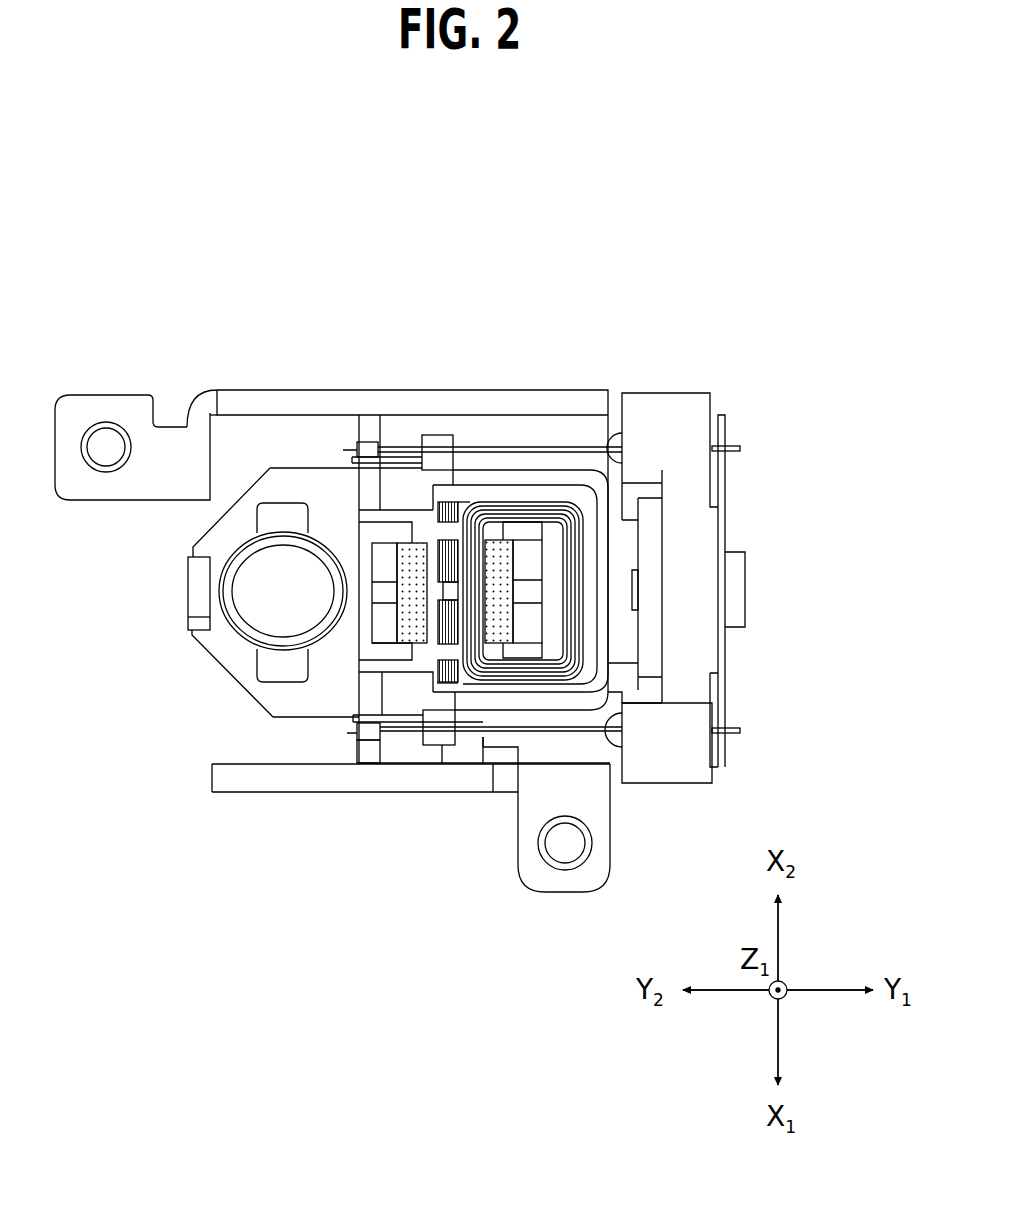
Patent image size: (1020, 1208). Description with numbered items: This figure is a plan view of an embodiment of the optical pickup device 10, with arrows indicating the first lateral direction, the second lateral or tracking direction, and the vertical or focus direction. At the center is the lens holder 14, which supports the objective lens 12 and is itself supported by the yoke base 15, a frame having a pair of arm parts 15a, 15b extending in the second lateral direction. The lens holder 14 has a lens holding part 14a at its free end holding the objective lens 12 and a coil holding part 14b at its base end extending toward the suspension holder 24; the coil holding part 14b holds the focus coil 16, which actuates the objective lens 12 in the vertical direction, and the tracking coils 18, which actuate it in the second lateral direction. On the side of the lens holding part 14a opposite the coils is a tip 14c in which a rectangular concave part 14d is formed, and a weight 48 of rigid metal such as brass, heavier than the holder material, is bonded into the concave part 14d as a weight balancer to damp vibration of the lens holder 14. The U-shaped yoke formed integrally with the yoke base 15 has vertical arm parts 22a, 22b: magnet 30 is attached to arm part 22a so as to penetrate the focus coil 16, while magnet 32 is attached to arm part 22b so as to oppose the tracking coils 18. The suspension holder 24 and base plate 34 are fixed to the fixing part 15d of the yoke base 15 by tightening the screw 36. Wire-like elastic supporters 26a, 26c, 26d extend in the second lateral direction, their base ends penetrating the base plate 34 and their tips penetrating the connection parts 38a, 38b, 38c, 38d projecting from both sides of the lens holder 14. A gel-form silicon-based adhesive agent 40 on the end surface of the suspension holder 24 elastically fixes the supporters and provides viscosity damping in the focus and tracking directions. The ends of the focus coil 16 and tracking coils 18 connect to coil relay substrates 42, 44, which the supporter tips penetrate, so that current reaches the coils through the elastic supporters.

The optical pickup device 10 is at (385, 227).
The objective lens 12 is at (253, 612).
The lens holder 14 is at (290, 463).
The lens holding part 14a is at (320, 493).
The coil holding part 14b is at (513, 478).
The tip 14c is at (213, 543).
The concave part 14d is at (187, 620).
The yoke base 15 is at (308, 388).
The arm part 15a is at (232, 782).
The arm part 15b is at (398, 416).
The fixing part 15d is at (652, 545).
The focus coil 16 is at (557, 470).
The tracking coils 18 is at (443, 435).
The arm part 22a is at (532, 563).
The arm part 22b is at (383, 620).
The suspension holder 24 is at (690, 417).
The elastic supporter 26a is at (485, 745).
The elastic supporter 26c is at (553, 507).
The elastic supporter 26d is at (523, 591).
The magnet 30 is at (503, 630).
The magnet 32 is at (415, 560).
The base plate 34 is at (723, 433).
The screw 36 is at (737, 596).
The connection part 38a is at (452, 690).
The connection part 38b is at (447, 671).
The connection part 38c is at (455, 502).
The connection part 38d is at (448, 570).
The adhesive agent 40 is at (620, 442).
The coil relay substrate 42 is at (357, 750).
The coil relay substrate 44 is at (375, 442).
The weight 48 is at (200, 593).